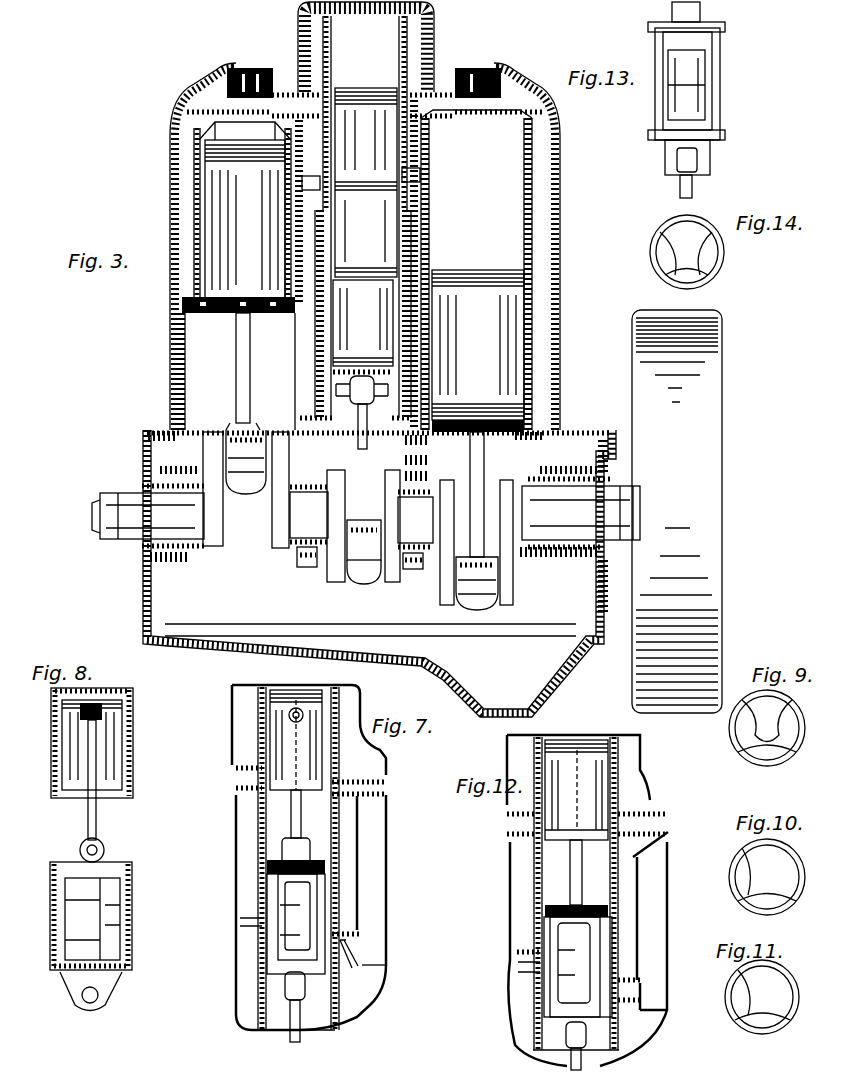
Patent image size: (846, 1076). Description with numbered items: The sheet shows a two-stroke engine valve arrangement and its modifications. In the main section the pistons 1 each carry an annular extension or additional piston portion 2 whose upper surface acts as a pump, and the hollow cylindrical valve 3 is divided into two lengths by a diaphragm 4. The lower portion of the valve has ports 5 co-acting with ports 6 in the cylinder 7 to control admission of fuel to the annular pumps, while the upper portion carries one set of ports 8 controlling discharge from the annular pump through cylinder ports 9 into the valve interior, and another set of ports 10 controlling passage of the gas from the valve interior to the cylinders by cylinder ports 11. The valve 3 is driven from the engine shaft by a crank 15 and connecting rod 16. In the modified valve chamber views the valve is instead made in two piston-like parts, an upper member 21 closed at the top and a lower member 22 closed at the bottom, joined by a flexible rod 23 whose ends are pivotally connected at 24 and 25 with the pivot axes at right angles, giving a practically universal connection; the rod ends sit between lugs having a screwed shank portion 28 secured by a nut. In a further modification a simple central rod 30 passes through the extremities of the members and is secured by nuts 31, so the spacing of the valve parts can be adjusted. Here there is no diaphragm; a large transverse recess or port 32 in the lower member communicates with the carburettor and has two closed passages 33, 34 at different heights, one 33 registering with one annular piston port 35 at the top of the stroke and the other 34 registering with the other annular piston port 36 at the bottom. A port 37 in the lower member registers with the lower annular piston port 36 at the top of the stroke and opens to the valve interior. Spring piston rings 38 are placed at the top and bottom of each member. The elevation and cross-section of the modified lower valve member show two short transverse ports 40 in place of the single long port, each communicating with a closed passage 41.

In FIG. 3, the piston 1 is at (193, 190).
In FIG. 3, the annular extension or additional piston portion 2 is at (173, 308).
In FIG. 3, the valve 3 is at (368, 217).
In FIG. 9, the valve 3 is at (735, 735).
In FIG. 10, the valve 3 is at (730, 874).
In FIG. 11, the valve 3 is at (786, 975).
In FIG. 3, the diaphragm 4 is at (366, 182).
In FIG. 3, the ports 5 is at (390, 302).
In FIG. 3, the ports 6 is at (316, 290).
In FIG. 3, the cylinder 7 is at (405, 56).
In FIG. 3, the ports 8 is at (280, 223).
In FIG. 3, the cylinder ports 9 is at (323, 187).
In FIG. 3, the ports 10 is at (303, 173).
In FIG. 7, the ports 10 is at (340, 702).
In FIG. 12, the ports 10 is at (612, 752).
In FIG. 3, the cylinder ports 11 is at (313, 103).
In FIG. 7, the cylinder ports 11 is at (235, 775).
In FIG. 12, the cylinder ports 11 is at (650, 825).
In FIG. 3, the crank 15 is at (338, 545).
In FIG. 3, the connecting rod 16 is at (363, 563).
In FIG. 8, the upper valve member 21 is at (52, 700).
In FIG. 7, the upper valve member 21 is at (330, 775).
In FIG. 12, the upper valve member 21 is at (620, 790).
In FIG. 8, the lower valve member 22 is at (66, 920).
In FIG. 7, the lower valve member 22 is at (388, 935).
In FIG. 12, the lower valve member 22 is at (535, 988).
In FIG. 8, the flexible rod 23 is at (98, 822).
In FIG. 7, the flexible rod 23 is at (303, 812).
In FIG. 8, the pivotal connection 24 is at (112, 712).
In FIG. 8, the pivotal connection 25 is at (106, 850).
In FIG. 7, the pivotal connection 25 is at (262, 740).
In FIG. 8, the screwed shank portion 28 is at (98, 698).
In FIG. 12, the central rod 30 is at (540, 872).
In FIG. 12, the nuts 31 is at (578, 740).
In FIG. 9, the transverse recess or port 32 is at (767, 756).
In FIG. 10, the transverse recess or port 32 is at (770, 902).
In FIG. 11, the transverse recess or port 32 is at (750, 1025).
In FIG. 7, the transverse recess or port 32 is at (297, 913).
In FIG. 11, the closed passage 33 is at (740, 998).
In FIG. 7, the closed passage 33 is at (290, 928).
In FIG. 9, the closed passage 34 is at (790, 752).
In FIG. 7, the closed passage 34 is at (345, 880).
In FIG. 12, the closed passage 34 is at (620, 925).
In FIG. 7, the annular piston port 35 is at (260, 922).
In FIG. 12, the annular piston port 35 is at (540, 965).
In FIG. 7, the annular piston port 36 is at (340, 943).
In FIG. 12, the annular piston port 36 is at (620, 1000).
In FIG. 7, the port 37 is at (340, 962).
In FIG. 12, the port 37 is at (640, 978).
In FIG. 12, the spring piston rings 38 is at (540, 917).
In FIG. 13, the transverse ports 40 is at (685, 52).
In FIG. 14, the closed passage 41 is at (660, 248).